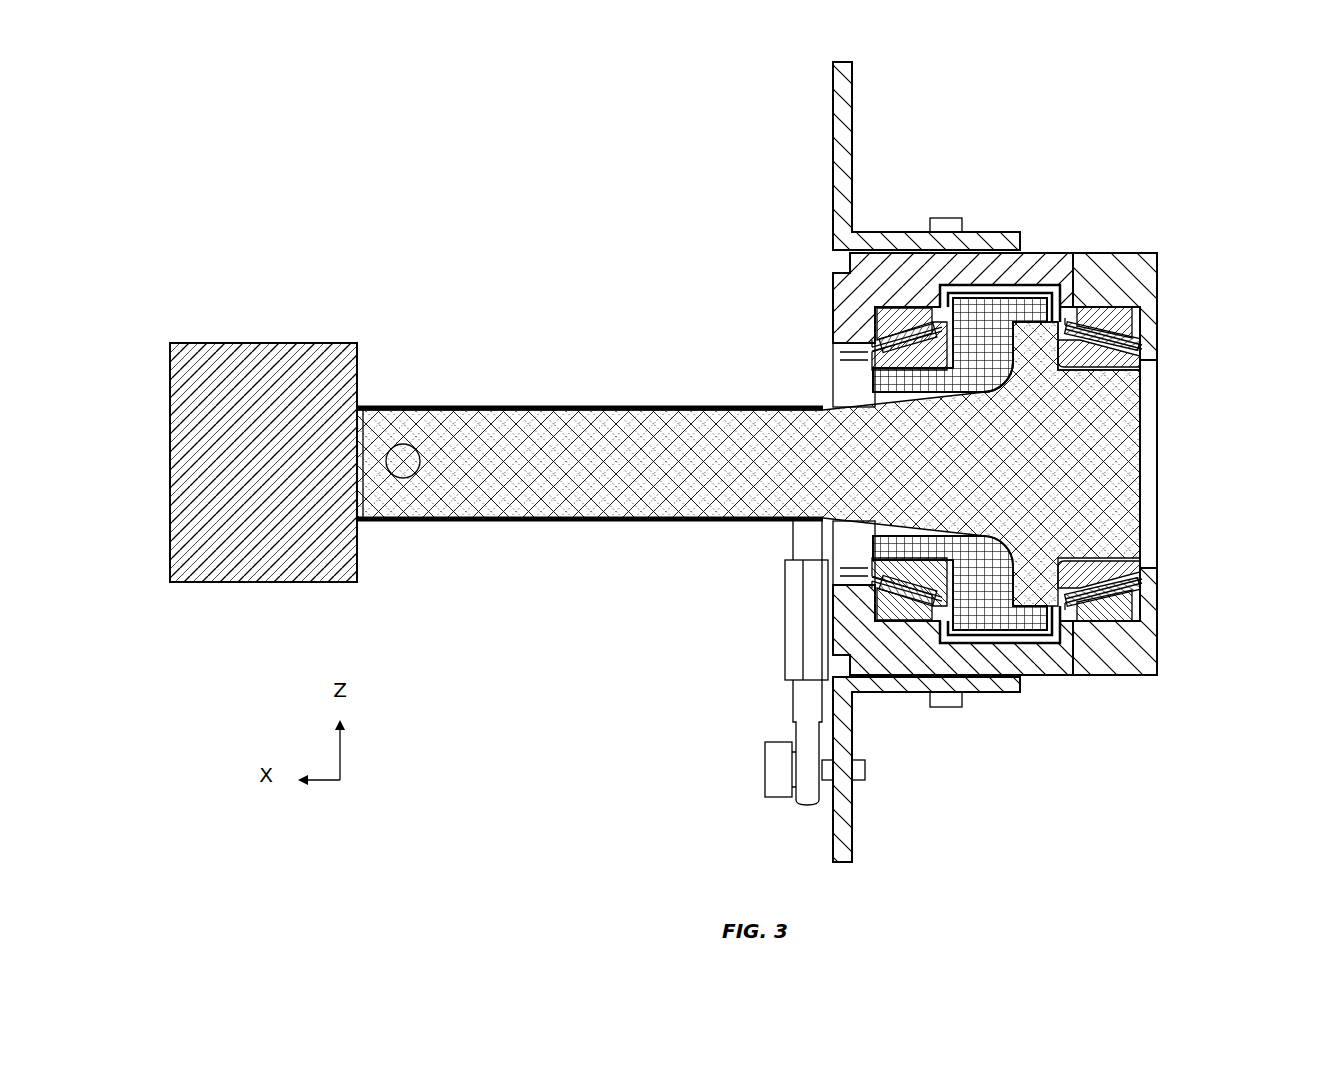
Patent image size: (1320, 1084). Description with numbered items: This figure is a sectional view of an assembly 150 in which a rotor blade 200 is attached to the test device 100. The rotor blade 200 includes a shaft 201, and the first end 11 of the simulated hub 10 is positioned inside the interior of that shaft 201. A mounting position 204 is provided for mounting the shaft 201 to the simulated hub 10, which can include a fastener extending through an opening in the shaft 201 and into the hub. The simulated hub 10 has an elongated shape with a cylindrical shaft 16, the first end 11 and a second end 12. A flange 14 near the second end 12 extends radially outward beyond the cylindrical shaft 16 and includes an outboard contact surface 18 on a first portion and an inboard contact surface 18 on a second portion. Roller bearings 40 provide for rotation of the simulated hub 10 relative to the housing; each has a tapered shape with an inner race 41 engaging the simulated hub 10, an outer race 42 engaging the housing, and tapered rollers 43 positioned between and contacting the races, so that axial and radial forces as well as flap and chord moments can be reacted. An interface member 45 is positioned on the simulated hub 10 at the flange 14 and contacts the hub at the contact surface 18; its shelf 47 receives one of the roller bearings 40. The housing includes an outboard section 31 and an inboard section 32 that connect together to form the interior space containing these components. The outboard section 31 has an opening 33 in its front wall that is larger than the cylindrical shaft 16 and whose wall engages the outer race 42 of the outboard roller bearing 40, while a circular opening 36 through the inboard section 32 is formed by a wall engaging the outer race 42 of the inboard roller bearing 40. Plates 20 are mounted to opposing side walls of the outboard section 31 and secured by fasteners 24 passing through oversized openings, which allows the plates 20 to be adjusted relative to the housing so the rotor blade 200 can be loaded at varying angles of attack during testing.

The simulated hub 10 is at (565, 490).
The first end 11 is at (368, 440).
The second end 12 is at (1137, 400).
The flange 14 is at (1045, 300).
The cylindrical shaft 16 is at (697, 440).
The contact surface 18 is at (1035, 340).
The plate 20 is at (833, 102).
The fastener 24 is at (946, 218).
The outboard section 31 is at (1070, 265).
The inboard section 32 is at (1140, 275).
The opening 33 is at (855, 345).
The opening 36 is at (1137, 572).
The roller bearing 40 is at (893, 307).
The inner race 41 is at (860, 368).
The outer race 42 is at (872, 322).
The roller 43 is at (872, 328).
The interface member 45 is at (1000, 330).
The shelf 47 is at (967, 370).
The device 100 is at (1053, 137).
The assembly 150 is at (490, 195).
The rotor blade 200 is at (237, 298).
The shaft 201 is at (497, 408).
The mounting position 204 is at (403, 461).